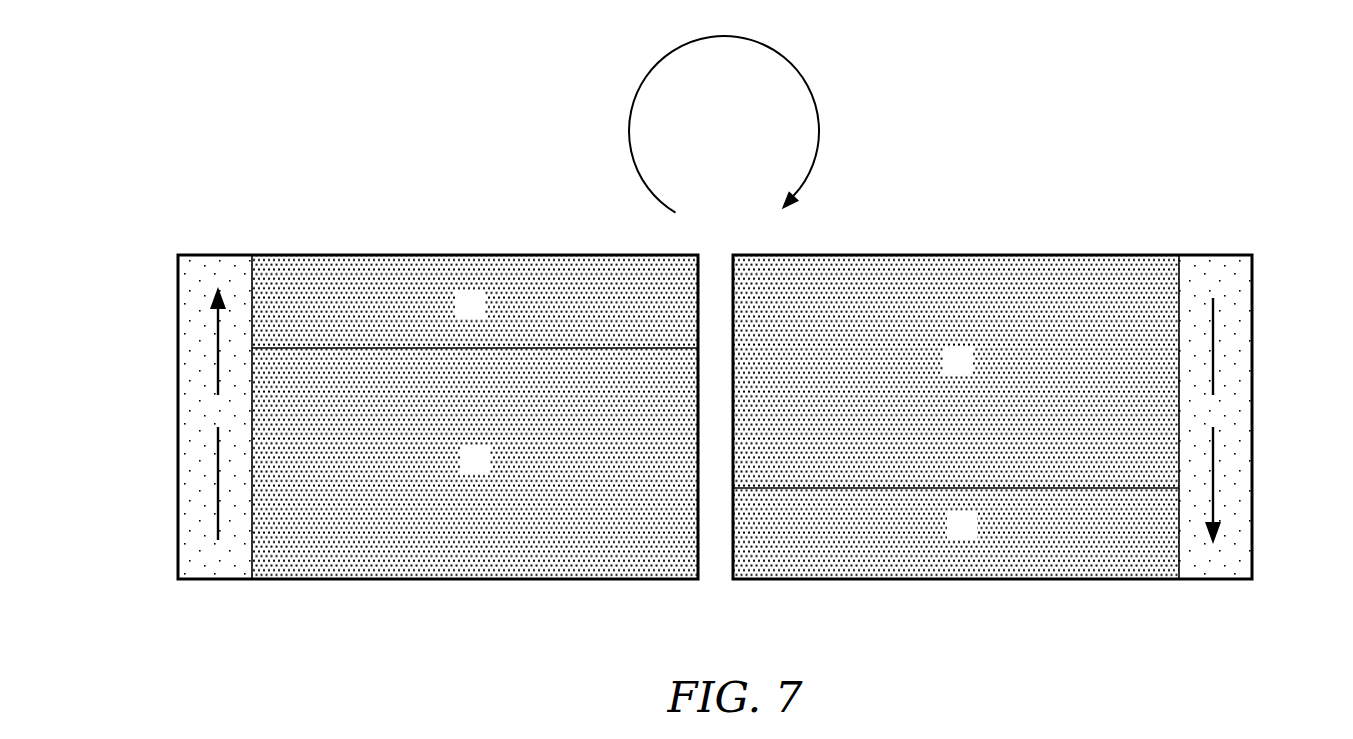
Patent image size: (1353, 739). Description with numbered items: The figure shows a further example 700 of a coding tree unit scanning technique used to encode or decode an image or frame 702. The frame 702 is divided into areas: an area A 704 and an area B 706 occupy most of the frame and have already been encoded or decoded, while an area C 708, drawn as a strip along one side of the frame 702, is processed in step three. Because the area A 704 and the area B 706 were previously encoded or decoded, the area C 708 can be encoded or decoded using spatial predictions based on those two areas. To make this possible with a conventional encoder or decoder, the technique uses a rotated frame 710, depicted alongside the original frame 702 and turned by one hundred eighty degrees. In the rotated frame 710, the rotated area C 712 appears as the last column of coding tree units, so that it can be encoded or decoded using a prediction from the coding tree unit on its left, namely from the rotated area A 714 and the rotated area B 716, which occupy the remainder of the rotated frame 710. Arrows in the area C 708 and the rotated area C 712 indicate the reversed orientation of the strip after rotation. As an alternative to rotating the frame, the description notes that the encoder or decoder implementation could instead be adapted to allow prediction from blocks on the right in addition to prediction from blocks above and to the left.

The example of a CTU scanning technique 700 is at (506, 90).
The image/frame 702 is at (393, 413).
The area A 704 is at (372, 540).
The area B 706 is at (420, 283).
The area C 708 is at (170, 593).
The rotated frame 710 is at (1041, 410).
The rotated area C 712 is at (1263, 593).
The rotated area A 714 is at (951, 280).
The rotated area B 716 is at (833, 558).